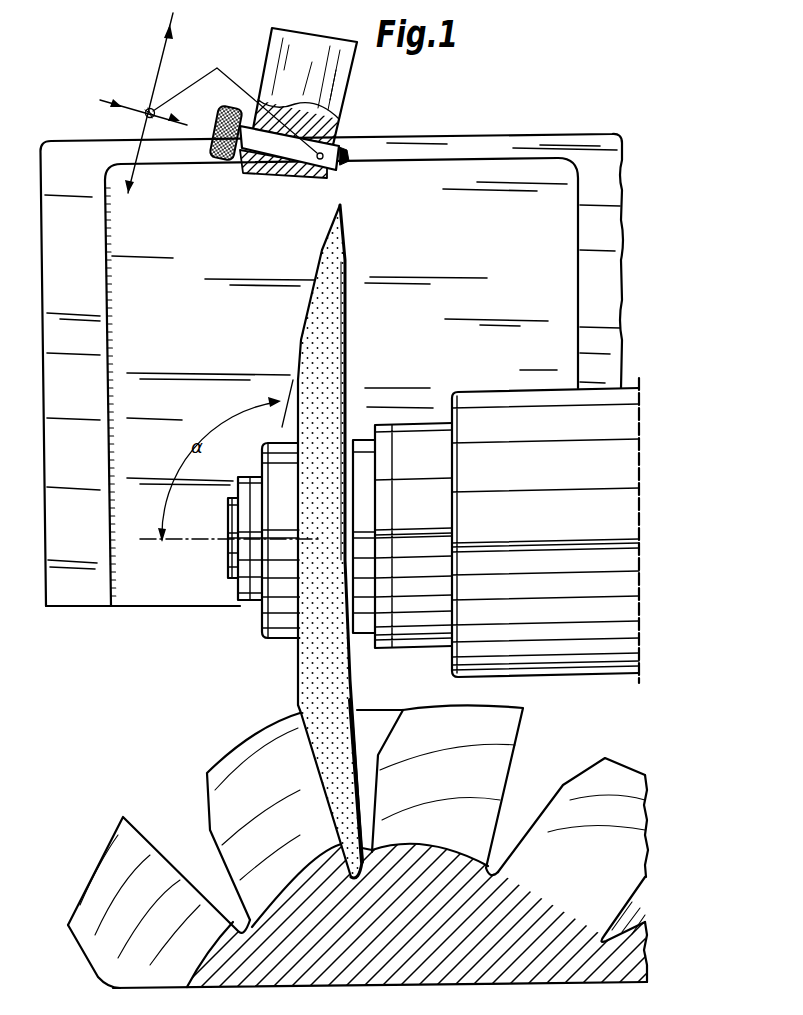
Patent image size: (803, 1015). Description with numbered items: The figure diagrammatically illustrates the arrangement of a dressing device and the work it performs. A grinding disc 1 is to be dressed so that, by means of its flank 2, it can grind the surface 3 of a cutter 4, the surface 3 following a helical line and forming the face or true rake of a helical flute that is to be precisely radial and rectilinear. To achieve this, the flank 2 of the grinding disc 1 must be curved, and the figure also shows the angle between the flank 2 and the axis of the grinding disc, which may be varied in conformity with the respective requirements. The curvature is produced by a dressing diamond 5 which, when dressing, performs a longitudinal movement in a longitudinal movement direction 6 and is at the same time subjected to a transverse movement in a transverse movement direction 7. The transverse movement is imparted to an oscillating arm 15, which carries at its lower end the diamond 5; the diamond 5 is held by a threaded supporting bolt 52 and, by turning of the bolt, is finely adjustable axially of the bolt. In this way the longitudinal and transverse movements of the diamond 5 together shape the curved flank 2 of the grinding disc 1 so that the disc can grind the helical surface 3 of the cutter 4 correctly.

The grinding disc 1 is at (317, 384).
The flank 2 is at (299, 348).
The surface 3 is at (150, 832).
The cutter 4 is at (254, 763).
The diamond 5 is at (345, 160).
The longitudinal movement direction 6 is at (156, 116).
The transverse movement direction 7 is at (142, 110).
The oscillating arm 15 is at (340, 82).
The threaded supporting bolt 52 is at (248, 140).